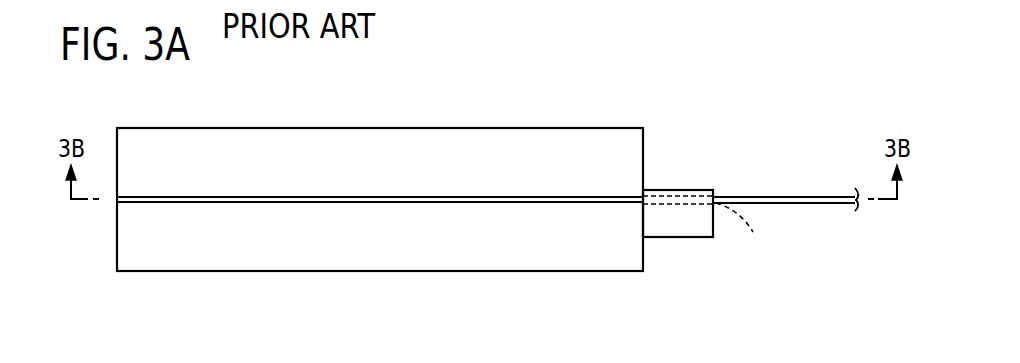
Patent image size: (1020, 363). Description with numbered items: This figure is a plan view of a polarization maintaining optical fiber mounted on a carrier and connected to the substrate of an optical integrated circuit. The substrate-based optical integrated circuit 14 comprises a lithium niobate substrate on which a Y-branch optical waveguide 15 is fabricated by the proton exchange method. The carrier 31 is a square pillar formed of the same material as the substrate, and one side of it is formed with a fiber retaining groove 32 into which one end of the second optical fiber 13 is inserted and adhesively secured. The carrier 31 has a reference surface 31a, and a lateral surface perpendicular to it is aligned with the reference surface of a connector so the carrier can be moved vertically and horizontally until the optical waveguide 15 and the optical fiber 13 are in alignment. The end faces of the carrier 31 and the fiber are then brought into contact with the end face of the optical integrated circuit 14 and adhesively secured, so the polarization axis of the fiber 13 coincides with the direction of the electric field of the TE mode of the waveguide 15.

The substrate-based optical integrated circuit 14 is at (385, 272).
The Y-branch optical waveguide 15 is at (512, 203).
The carrier 31 is at (667, 190).
The reference surface 31a is at (684, 239).
The second optical fiber 13 is at (774, 196).
The fiber retaining groove 32 is at (746, 235).